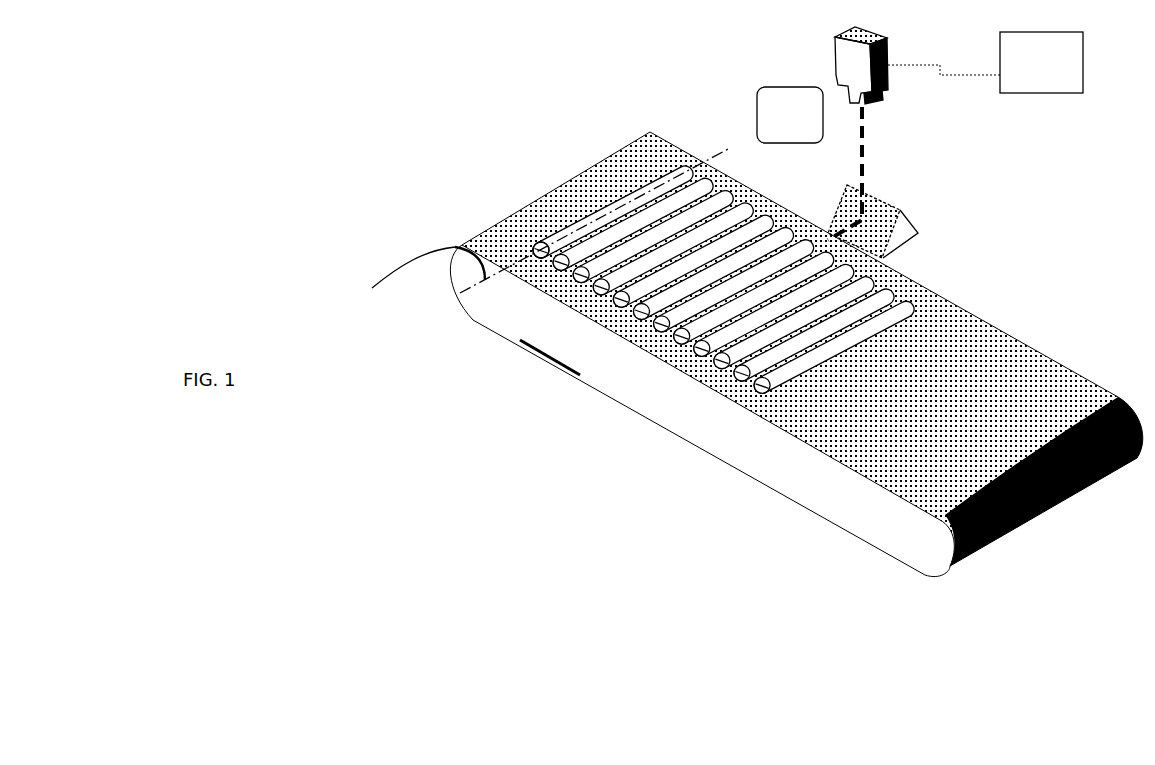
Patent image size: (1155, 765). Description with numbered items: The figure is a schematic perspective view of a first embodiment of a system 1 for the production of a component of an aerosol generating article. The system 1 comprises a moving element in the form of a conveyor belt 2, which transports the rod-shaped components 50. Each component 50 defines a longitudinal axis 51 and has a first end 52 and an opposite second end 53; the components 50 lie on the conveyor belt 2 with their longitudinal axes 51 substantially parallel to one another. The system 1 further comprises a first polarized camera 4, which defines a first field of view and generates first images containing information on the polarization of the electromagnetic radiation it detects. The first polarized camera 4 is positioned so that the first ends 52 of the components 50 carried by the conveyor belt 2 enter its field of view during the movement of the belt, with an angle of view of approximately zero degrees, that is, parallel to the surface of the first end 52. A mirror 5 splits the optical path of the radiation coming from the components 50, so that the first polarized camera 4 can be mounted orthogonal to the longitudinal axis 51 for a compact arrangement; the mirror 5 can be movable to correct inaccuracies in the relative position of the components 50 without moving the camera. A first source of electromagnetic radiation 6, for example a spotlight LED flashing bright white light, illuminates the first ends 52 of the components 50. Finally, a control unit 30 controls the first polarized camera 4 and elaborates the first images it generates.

The system 1 is at (476, 96).
The conveyor belt 2 is at (606, 162).
The first polarized camera 4 is at (895, 38).
The mirror 5 is at (922, 207).
The first source of electromagnetic radiation 6 is at (778, 107).
The control unit 30 is at (1041, 62).
The component 50 is at (572, 220).
The longitudinal axis 51 is at (411, 279).
The first end 52 is at (685, 167).
The second end 53 is at (537, 242).